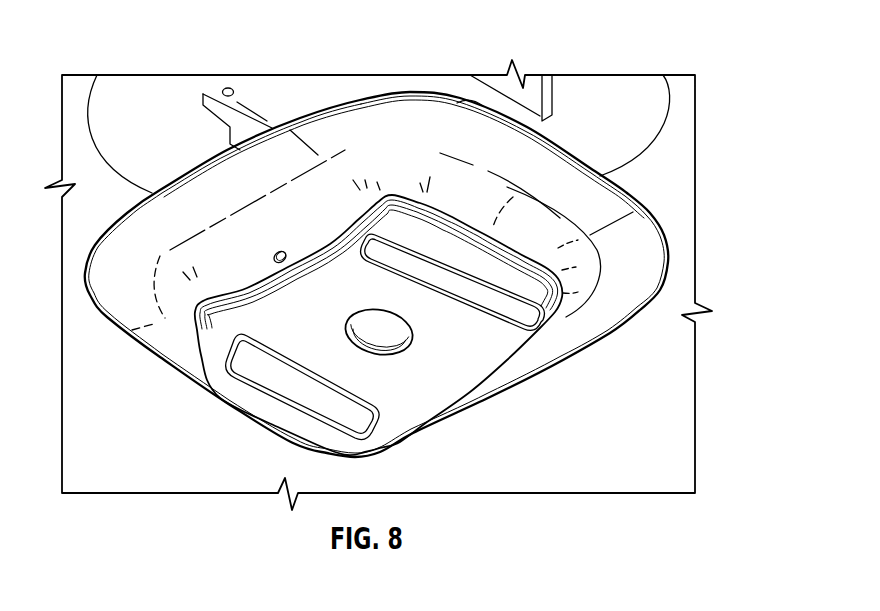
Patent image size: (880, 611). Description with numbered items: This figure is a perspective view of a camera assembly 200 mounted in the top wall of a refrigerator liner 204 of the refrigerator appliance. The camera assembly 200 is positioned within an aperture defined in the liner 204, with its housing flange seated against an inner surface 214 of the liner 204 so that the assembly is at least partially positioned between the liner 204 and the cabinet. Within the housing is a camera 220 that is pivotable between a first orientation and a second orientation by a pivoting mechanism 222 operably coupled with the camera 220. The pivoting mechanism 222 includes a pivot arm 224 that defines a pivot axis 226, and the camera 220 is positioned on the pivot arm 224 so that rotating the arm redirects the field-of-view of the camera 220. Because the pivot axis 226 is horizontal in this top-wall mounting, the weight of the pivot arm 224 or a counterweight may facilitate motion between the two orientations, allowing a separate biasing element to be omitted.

The camera assembly 200 is at (672, 225).
The refrigerator liner 204 is at (641, 113).
The inner surface 214 is at (610, 97).
The camera 220 is at (386, 323).
The pivoting mechanism 222 is at (243, 292).
The pivot arm 224 is at (223, 312).
The pivot axis 226 is at (286, 252).